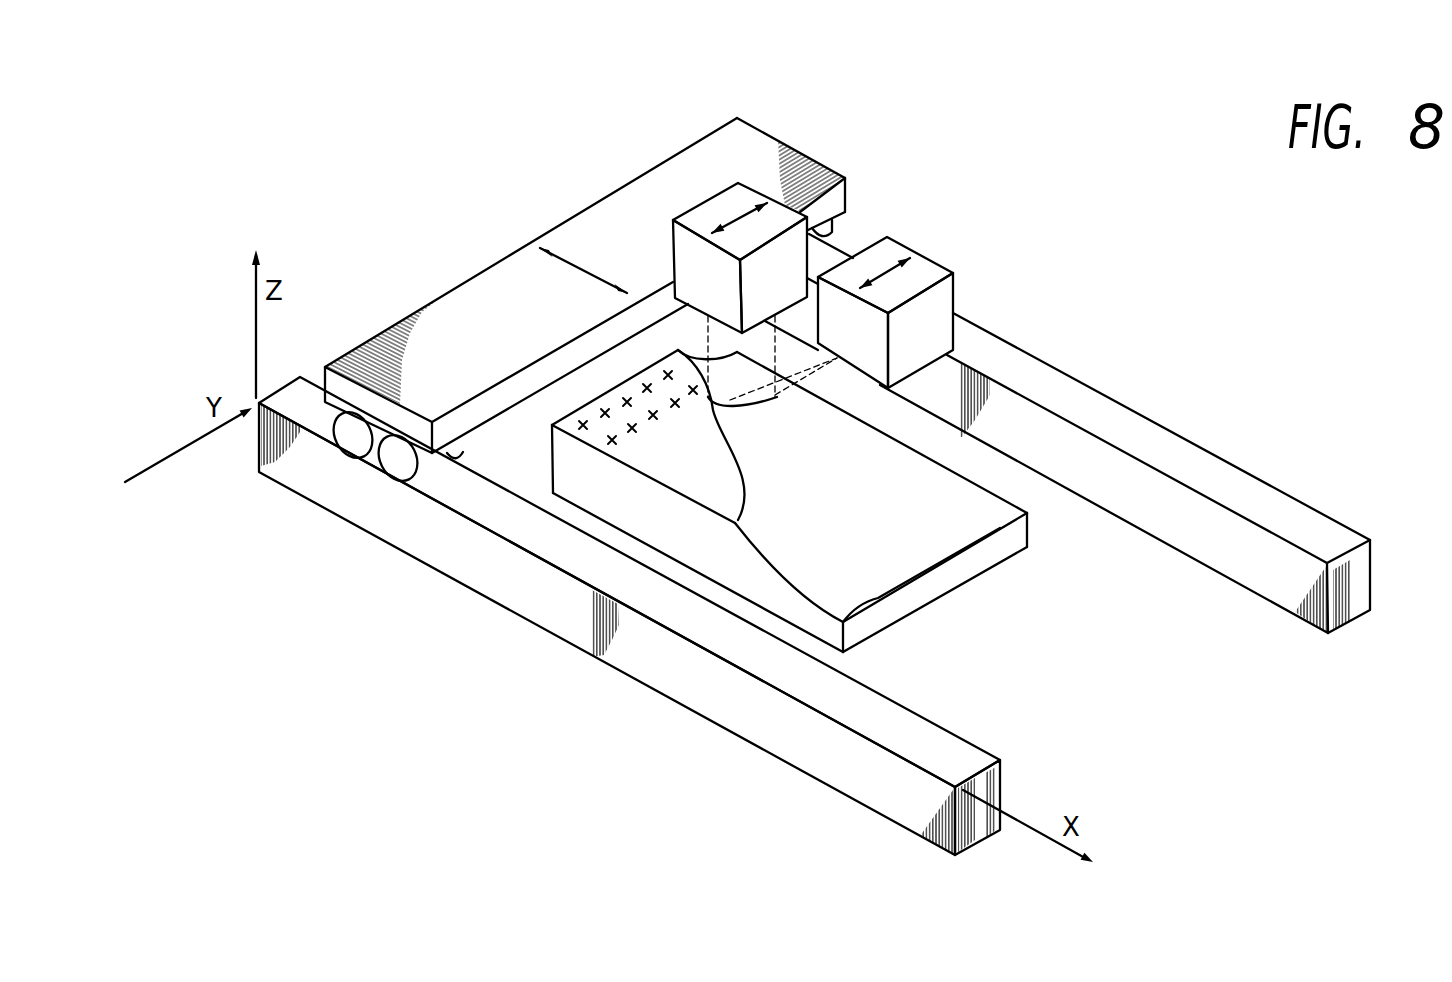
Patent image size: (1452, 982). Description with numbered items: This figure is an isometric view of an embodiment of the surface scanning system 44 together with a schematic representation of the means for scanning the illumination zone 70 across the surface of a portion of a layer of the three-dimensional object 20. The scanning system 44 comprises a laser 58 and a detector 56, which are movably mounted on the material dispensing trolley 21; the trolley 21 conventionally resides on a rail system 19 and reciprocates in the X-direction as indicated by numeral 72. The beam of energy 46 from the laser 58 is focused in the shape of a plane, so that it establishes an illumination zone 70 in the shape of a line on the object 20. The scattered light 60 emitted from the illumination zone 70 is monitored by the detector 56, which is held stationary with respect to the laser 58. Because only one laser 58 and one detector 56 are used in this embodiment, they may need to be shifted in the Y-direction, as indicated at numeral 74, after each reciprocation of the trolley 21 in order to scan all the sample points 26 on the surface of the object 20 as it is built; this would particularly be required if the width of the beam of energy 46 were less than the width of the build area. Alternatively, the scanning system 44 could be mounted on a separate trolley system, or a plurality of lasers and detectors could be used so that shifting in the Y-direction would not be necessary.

The rail system 19 is at (762, 702).
The three-dimensional object 20 is at (665, 523).
The material dispensing trolley 21 is at (648, 228).
The sample points 26 is at (583, 425).
The surface scanning system 44 is at (838, 227).
The beam of energy 46 is at (708, 367).
The detector 56 is at (927, 273).
The laser 58 is at (727, 205).
The scattered light 60 is at (807, 382).
The illumination zone 70 is at (733, 402).
The X-direction reciprocation 72 is at (590, 273).
The Y-direction shift 74 is at (737, 210).